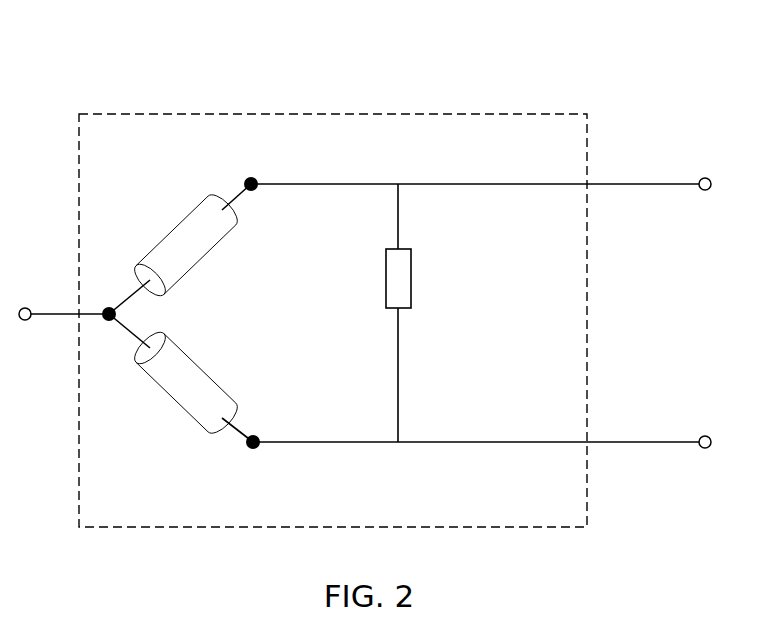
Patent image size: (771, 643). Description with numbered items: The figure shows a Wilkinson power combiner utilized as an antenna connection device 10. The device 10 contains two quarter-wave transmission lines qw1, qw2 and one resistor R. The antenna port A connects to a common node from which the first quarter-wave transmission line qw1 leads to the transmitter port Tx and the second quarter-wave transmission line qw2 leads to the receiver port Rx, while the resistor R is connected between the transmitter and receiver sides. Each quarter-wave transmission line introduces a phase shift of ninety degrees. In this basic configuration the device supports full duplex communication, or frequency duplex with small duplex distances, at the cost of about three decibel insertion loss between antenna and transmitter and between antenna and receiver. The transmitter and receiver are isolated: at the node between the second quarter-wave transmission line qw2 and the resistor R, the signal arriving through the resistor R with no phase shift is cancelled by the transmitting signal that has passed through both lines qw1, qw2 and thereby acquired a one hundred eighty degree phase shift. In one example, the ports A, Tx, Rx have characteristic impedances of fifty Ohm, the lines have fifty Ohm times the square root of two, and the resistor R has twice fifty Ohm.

The antenna connection device 10 is at (212, 108).
The antenna port A is at (26, 307).
The first quarter-wave transmission line qw1 is at (163, 230).
The second quarter-wave transmission line qw2 is at (168, 398).
The resistor R is at (411, 274).
The transmitter port Tx is at (705, 178).
The receiver port Rx is at (705, 436).